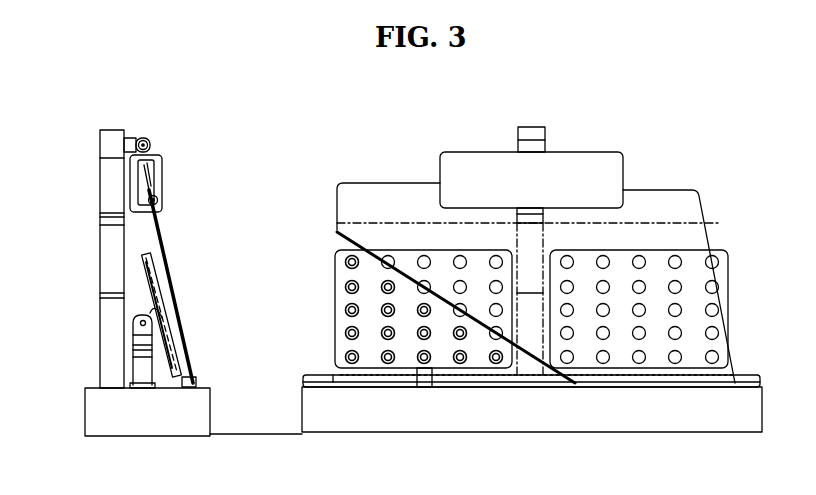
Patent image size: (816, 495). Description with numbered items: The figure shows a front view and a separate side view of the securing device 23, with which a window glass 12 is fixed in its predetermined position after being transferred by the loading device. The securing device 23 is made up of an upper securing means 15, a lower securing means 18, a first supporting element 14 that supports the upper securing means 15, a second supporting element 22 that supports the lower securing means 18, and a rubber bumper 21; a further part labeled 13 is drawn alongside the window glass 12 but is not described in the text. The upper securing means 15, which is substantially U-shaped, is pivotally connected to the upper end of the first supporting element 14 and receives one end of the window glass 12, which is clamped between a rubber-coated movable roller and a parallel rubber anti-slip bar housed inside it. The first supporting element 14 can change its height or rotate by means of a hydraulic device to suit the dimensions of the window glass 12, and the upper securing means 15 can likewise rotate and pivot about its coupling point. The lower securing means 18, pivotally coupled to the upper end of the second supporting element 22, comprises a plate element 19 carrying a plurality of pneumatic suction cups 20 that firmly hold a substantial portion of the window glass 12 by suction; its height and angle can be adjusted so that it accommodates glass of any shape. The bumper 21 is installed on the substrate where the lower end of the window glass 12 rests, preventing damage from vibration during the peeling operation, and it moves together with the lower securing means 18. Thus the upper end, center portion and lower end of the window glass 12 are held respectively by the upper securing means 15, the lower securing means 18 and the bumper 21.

The window glass 12 is at (132, 236).
The cover plate 13 is at (168, 298).
The first supporting element 14 is at (110, 187).
The upper securing means 15 is at (165, 178).
The lower securing means 18 is at (142, 284).
The plate element 19 is at (340, 324).
The pneumatic suction cups 20 is at (388, 364).
The bumper 21 is at (187, 385).
The second supporting element 22 is at (138, 368).
The securing device 23 is at (175, 262).